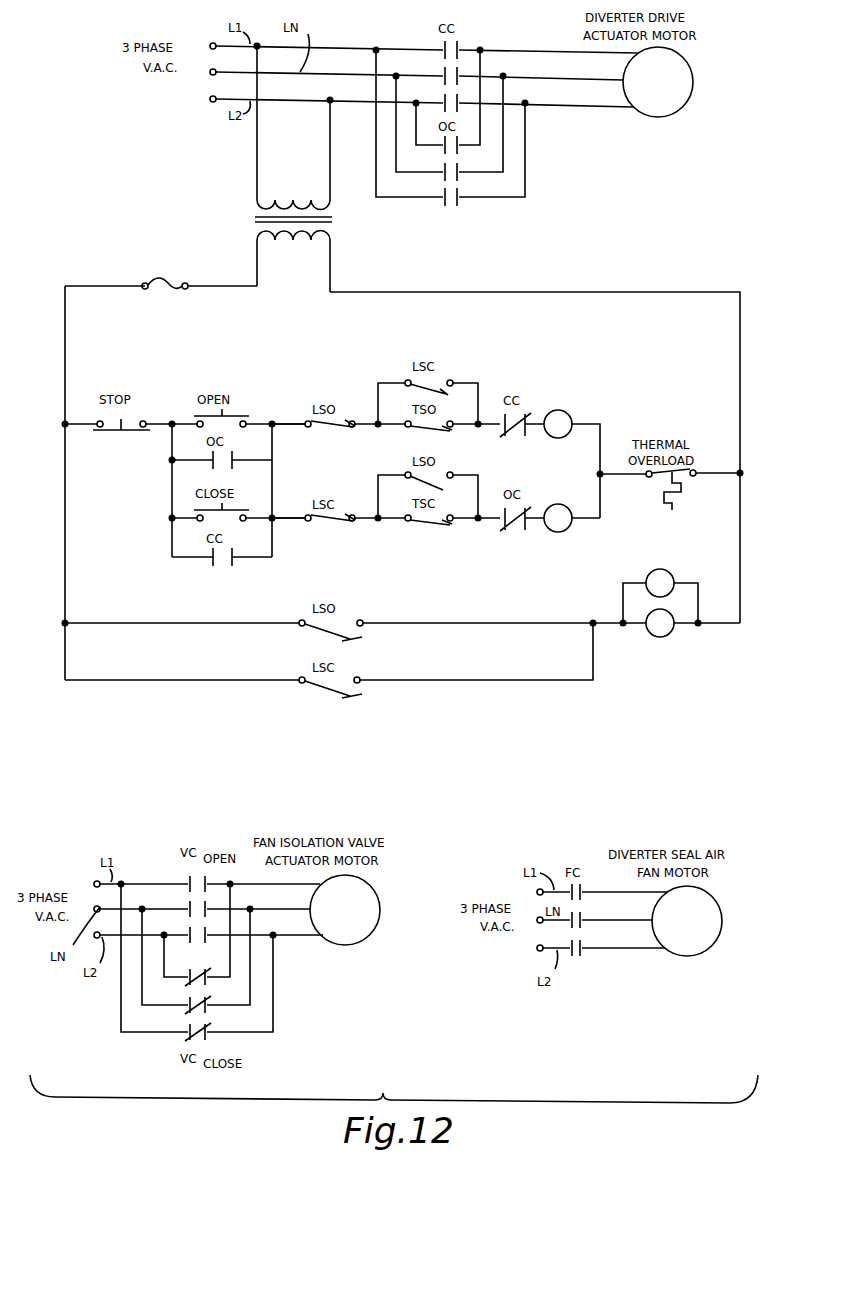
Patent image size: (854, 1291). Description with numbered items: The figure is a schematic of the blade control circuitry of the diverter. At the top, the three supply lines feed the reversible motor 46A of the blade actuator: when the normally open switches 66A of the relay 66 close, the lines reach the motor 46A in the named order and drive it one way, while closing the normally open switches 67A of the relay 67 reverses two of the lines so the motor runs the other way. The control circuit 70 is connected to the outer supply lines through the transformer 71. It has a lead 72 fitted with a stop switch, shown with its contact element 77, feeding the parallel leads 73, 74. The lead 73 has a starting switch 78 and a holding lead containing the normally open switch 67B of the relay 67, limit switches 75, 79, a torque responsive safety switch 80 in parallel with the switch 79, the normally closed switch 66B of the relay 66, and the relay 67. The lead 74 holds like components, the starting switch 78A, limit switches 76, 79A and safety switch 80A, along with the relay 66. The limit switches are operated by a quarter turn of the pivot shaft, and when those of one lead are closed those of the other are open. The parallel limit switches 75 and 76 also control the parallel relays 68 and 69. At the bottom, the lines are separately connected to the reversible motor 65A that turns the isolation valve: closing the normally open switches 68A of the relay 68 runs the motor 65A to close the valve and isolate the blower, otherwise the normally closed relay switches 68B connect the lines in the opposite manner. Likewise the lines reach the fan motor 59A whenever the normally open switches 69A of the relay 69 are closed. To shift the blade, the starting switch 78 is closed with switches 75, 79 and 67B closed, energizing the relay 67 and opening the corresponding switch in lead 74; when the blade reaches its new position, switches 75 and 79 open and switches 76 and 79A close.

The reversible motor 46A is at (693, 82).
The normally open switches 66A is at (458, 100).
The normally open switches 67A is at (458, 202).
The transformer 71 is at (250, 218).
The control circuit 70 is at (650, 320).
The lead 72 is at (112, 416).
The stop contact 77 is at (128, 432).
The starting switch 78 is at (243, 413).
The starting switch 78A is at (198, 512).
The lead 73 is at (289, 423).
The lead 74 is at (288, 516).
The limit switch 75 is at (328, 431).
The limit switch 76 is at (325, 533).
The limit switch 79 is at (437, 386).
The limit switch 79A is at (426, 487).
The safety switch 80 is at (425, 431).
The safety switch 80A is at (428, 527).
The normally closed switch 66B is at (528, 414).
The relay 67 is at (568, 417).
The normally open switch 67B is at (501, 531).
The relay 66 is at (553, 533).
The relay 68 is at (674, 577).
The relay 69 is at (672, 637).
The normally open switches 68A is at (190, 931).
The normally closed relay switches 68B is at (186, 986).
The reversible motor 65A is at (372, 928).
The normally open switches 69A is at (583, 951).
The fan motor 59A is at (722, 921).